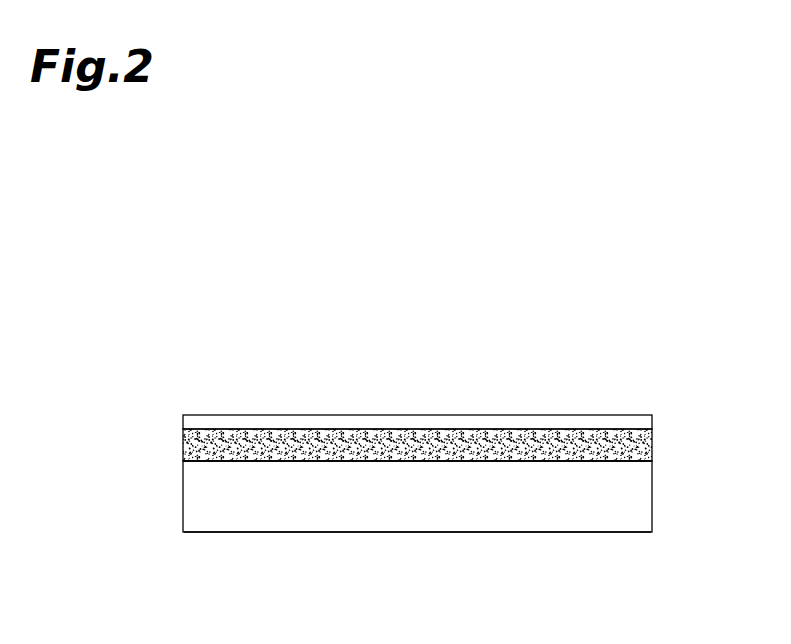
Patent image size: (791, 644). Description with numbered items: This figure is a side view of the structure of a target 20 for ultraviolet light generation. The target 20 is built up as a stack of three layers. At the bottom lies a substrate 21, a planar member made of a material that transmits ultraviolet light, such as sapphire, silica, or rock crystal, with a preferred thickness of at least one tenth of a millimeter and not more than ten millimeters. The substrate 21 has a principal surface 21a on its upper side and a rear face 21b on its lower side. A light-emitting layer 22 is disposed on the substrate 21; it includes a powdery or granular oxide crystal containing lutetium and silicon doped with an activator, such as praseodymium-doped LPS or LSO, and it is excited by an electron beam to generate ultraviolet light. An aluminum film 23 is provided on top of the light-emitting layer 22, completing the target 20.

The target 20 is at (632, 380).
The substrate 21 is at (638, 494).
The principal surface 21a is at (397, 444).
The rear face 21b is at (382, 533).
The light-emitting layer 22 is at (646, 437).
The aluminum film 23 is at (645, 420).